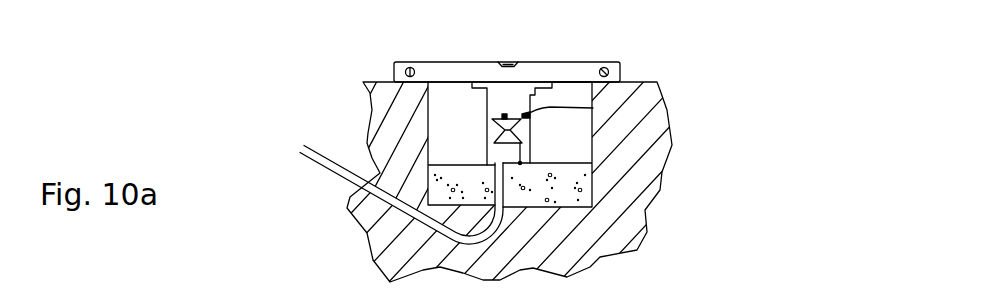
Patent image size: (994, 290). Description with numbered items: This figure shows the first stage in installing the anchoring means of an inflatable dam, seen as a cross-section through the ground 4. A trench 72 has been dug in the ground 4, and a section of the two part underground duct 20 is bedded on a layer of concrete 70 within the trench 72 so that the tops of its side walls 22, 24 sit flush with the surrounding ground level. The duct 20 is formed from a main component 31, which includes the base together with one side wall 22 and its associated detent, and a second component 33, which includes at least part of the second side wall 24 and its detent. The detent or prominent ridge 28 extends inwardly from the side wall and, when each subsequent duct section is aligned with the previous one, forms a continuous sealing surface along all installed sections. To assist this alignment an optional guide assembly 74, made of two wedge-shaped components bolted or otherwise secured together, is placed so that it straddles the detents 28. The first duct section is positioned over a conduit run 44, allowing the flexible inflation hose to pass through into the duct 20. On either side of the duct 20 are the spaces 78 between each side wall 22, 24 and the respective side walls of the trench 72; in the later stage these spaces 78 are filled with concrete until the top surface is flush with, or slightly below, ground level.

The ground 4 is at (637, 140).
The duct 20 is at (520, 147).
The side wall 22 is at (487, 97).
The side wall 24 is at (530, 117).
The detent 28 is at (492, 132).
The main component 31 is at (487, 109).
The second component 33 is at (593, 108).
The conduit run 44 is at (390, 215).
The layer of concrete 70 is at (580, 180).
The trench 72 is at (578, 98).
The guide assembly 74 is at (503, 115).
The spaces 78 is at (466, 161).